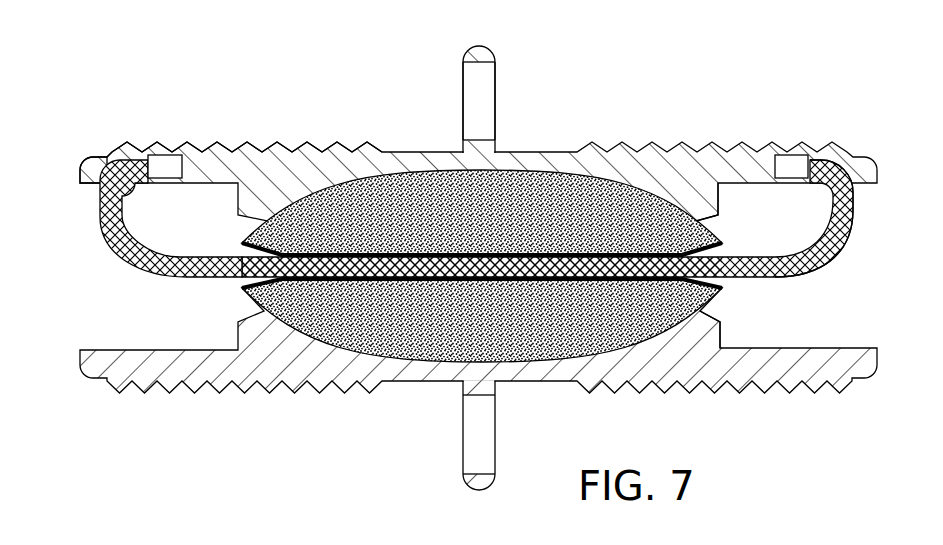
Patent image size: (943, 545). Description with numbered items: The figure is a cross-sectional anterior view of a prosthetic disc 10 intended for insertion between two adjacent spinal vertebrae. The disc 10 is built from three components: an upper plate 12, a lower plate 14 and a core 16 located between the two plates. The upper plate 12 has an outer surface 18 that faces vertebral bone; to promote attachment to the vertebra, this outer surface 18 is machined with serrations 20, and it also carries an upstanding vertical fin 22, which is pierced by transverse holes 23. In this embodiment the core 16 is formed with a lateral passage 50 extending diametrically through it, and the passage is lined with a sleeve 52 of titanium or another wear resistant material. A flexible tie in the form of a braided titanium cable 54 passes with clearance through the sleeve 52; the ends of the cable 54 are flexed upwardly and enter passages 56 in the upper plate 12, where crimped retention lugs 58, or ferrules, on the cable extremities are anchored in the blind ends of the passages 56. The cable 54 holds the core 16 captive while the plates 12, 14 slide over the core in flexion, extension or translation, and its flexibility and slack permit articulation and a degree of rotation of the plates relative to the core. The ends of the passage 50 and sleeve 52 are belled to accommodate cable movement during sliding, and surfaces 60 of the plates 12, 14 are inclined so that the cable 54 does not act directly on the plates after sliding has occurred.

The prosthetic disc 10 is at (760, 134).
The upper plate 12 is at (80, 177).
The lower plate 14 is at (80, 357).
The core 16 is at (245, 300).
The outer surface 18 is at (302, 148).
The serrations 20 is at (242, 151).
The fin 22 is at (466, 52).
The transverse holes 23 is at (486, 99).
The lateral passage 50 is at (422, 280).
The sleeve 52 is at (524, 280).
The cable 54 is at (820, 266).
The passages 56 is at (860, 178).
The retention lugs 58 is at (775, 167).
The inclined surfaces 60 is at (720, 222).